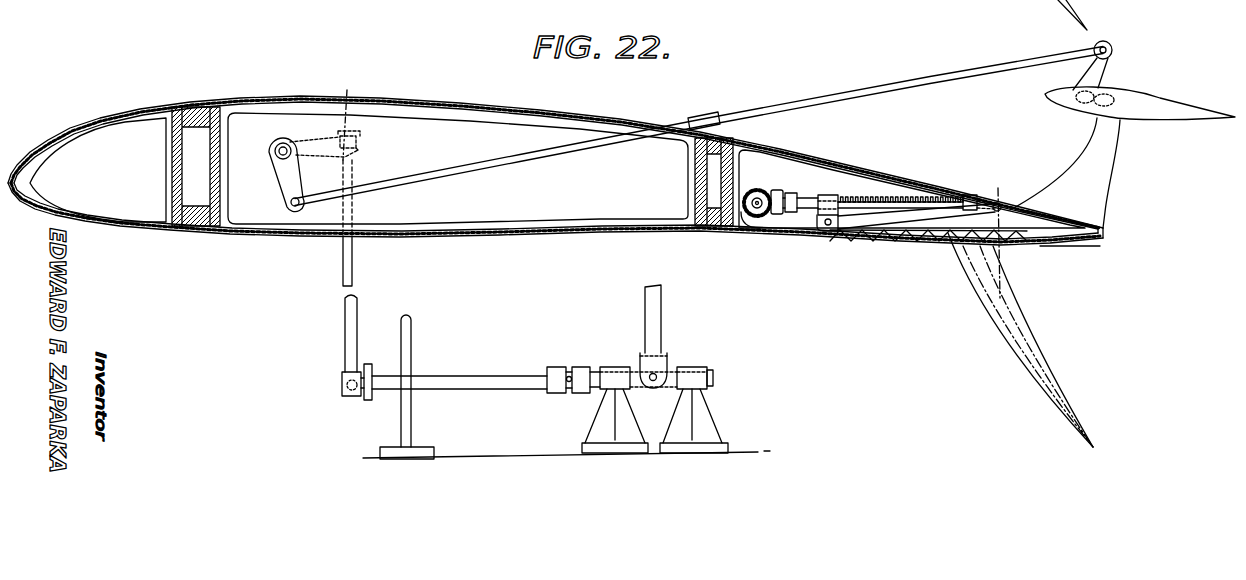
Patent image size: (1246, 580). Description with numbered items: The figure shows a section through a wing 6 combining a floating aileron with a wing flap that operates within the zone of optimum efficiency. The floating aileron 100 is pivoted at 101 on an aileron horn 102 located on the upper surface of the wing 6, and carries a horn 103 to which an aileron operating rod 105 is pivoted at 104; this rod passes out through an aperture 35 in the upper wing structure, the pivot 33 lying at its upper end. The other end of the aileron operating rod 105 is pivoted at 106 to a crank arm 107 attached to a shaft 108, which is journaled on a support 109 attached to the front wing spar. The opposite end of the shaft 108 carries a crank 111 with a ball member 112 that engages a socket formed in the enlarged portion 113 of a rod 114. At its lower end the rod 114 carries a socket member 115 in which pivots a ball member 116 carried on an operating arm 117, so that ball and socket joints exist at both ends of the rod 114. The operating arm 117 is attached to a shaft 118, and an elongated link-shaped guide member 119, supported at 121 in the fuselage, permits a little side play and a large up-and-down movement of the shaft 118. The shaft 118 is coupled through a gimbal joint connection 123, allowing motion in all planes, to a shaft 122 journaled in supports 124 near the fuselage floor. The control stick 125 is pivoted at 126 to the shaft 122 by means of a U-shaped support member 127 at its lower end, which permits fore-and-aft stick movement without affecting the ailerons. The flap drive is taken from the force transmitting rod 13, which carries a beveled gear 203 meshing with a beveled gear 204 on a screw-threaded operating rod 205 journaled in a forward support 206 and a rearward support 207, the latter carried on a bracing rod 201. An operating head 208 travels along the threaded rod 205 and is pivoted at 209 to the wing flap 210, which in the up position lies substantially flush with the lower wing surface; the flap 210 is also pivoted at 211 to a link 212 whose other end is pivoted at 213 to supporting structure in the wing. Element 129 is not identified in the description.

The wing 6 is at (468, 101).
The force transmitting rod 13 is at (760, 190).
The pivot 33 is at (1111, 43).
The aperture 35 is at (702, 112).
The floating aileron 100 is at (1185, 103).
The pivot 101 is at (1118, 90).
The aileron horn 102 is at (1110, 178).
The horn 103 is at (1075, 74).
The pivot 104 is at (1112, 50).
The aileron operating rod 105 is at (447, 168).
The pivot 106 is at (288, 206).
The crank arm 107 is at (280, 181).
The shaft 108 is at (290, 143).
The support 109 is at (252, 132).
The crank 111 is at (356, 115).
The ball member 112 is at (362, 142).
The enlarged portion 113 is at (360, 150).
The rod 114 is at (354, 272).
The socket member 115 is at (343, 372).
The ball member 116 is at (340, 386).
The operating arm 117 is at (369, 366).
The shaft 118 is at (470, 376).
The guide member 119 is at (411, 324).
The support 121 is at (554, 443).
The shaft 122 is at (597, 367).
The gimbal joint connection 123 is at (561, 367).
The support 124 is at (702, 368).
The control stick 125 is at (662, 310).
The pivot 126 is at (657, 375).
The U-shaped support member 127 is at (640, 355).
The bracket 129 is at (600, 388).
The bracing rod 201 is at (788, 190).
The beveled gear 203 is at (746, 228).
The beveled gear 204 is at (776, 215).
The screw-threaded operating rod 205 is at (880, 197).
The support 206 is at (792, 193).
The support 207 is at (972, 194).
The operating head 208 is at (832, 195).
The pivot 209 is at (826, 233).
The wing flap 210 is at (1040, 246).
The pivot 211 is at (905, 243).
The link 212 is at (996, 196).
The pivot 213 is at (1001, 205).